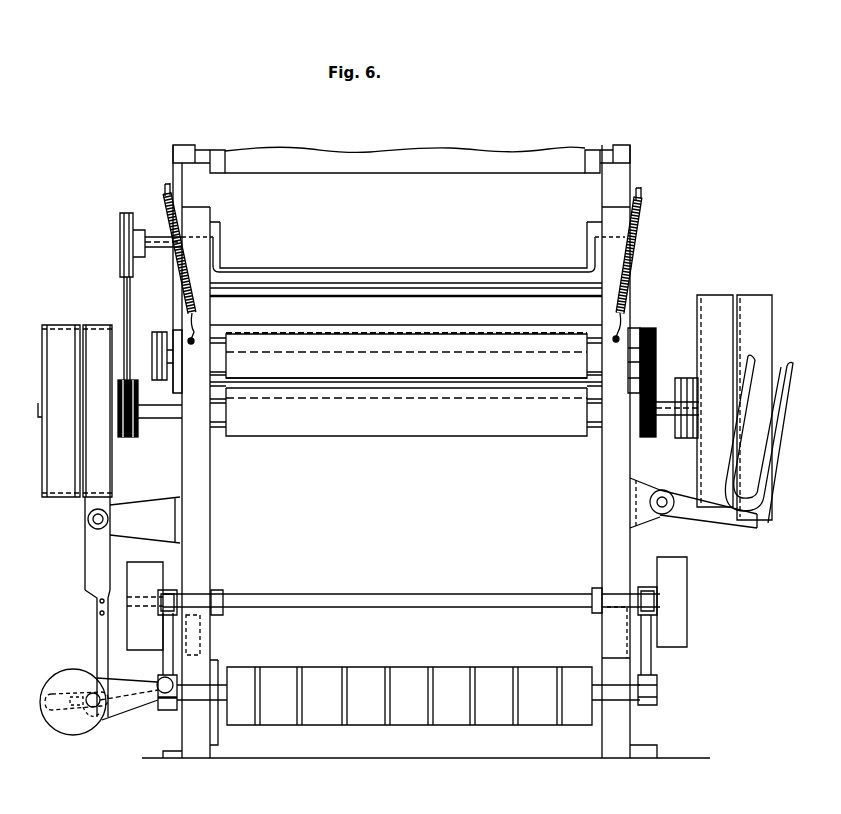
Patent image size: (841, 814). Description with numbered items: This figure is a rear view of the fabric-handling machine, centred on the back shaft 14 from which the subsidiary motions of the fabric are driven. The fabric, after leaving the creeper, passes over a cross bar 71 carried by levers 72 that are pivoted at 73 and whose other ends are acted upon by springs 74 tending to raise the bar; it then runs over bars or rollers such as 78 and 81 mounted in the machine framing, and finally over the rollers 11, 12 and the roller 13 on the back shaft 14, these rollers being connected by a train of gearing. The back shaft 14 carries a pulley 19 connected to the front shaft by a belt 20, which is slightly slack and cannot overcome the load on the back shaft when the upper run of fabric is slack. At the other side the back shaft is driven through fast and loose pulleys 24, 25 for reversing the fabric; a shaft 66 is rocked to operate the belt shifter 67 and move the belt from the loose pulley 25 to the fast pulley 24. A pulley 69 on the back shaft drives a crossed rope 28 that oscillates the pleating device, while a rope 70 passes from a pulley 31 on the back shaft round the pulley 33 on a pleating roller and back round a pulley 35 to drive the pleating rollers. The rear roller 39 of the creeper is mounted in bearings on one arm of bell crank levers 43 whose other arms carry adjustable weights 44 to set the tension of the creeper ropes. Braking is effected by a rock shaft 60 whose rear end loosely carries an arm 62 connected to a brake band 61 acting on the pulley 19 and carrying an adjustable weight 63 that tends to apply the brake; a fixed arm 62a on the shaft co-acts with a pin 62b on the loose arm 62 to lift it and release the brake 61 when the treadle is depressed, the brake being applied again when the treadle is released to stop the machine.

The roller 11 is at (350, 388).
The roller 12 is at (283, 348).
The roller 13 is at (417, 393).
The back shaft 14 is at (159, 418).
The pulley 19 is at (46, 497).
The belt 20 is at (68, 325).
The fast pulley 24 is at (708, 300).
The loose pulley 25 is at (752, 300).
The crossed rope 28 is at (684, 438).
The pulley 31 is at (132, 437).
The pulley 33 is at (156, 332).
The pulley 35 is at (122, 233).
The rear roller 39 is at (398, 724).
The bell crank levers 43 is at (173, 633).
The adjustable weights 44 is at (160, 576).
The rock shaft 60 is at (157, 683).
The brake band 61 is at (95, 574).
The arm 62 is at (66, 715).
The fixed arm 62a is at (140, 705).
The pin 62b is at (104, 712).
The adjustable weight 63 is at (65, 670).
The shaft 66 is at (665, 514).
The belt shifter 67 is at (762, 524).
The pulley 69 is at (692, 386).
The rope 70 is at (124, 302).
The cross bar 71 is at (375, 283).
The levers 72 is at (206, 256).
The pivot 73 is at (210, 222).
The spring 74 is at (196, 306).
The bar or roller 78 is at (268, 272).
The bar or roller 81 is at (491, 297).